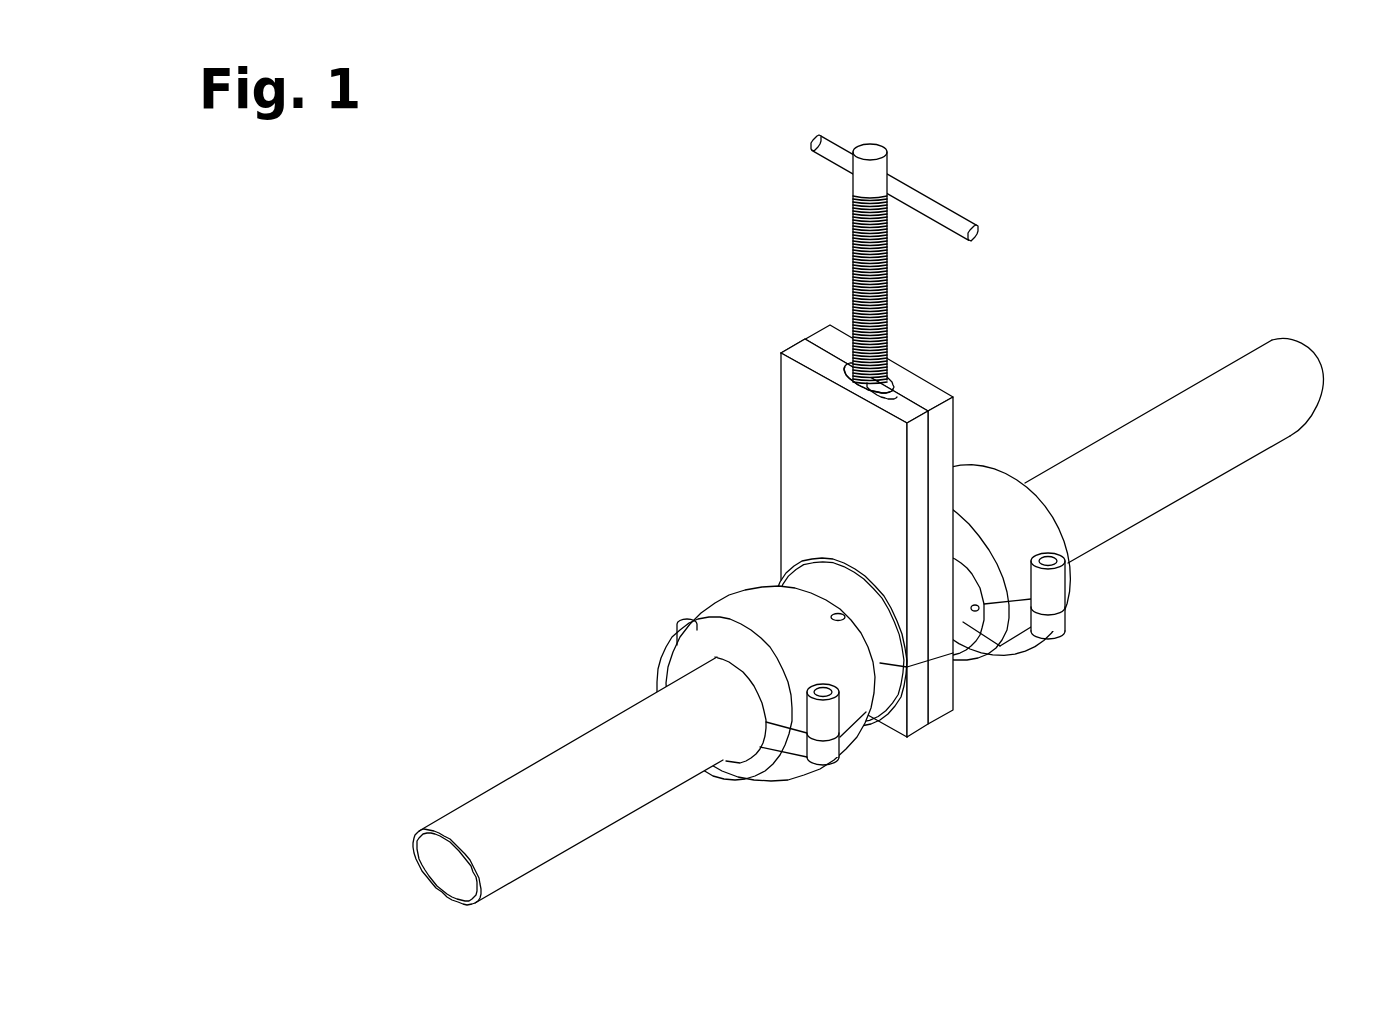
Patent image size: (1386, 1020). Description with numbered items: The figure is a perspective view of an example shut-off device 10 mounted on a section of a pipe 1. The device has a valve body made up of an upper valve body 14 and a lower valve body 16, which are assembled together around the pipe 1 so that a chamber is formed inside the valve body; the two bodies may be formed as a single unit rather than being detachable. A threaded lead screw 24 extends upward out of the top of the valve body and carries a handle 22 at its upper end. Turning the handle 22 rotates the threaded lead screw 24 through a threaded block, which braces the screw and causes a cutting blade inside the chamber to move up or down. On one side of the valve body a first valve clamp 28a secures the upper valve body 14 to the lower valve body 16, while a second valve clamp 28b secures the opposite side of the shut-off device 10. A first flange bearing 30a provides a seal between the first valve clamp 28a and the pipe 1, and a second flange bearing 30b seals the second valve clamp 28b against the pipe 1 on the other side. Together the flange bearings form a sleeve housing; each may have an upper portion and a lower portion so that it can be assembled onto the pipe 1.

The pipe 1 is at (582, 738).
The shut-off device 10 is at (891, 456).
The upper valve body 14 is at (966, 505).
The lower valve body 16 is at (953, 572).
The handle 22 is at (813, 134).
The threaded lead screw 24 is at (852, 263).
The first valve clamp 28a is at (723, 612).
The second valve clamp 28b is at (1052, 588).
The first flange bearing 30a is at (683, 552).
The second flange bearing 30b is at (1034, 649).